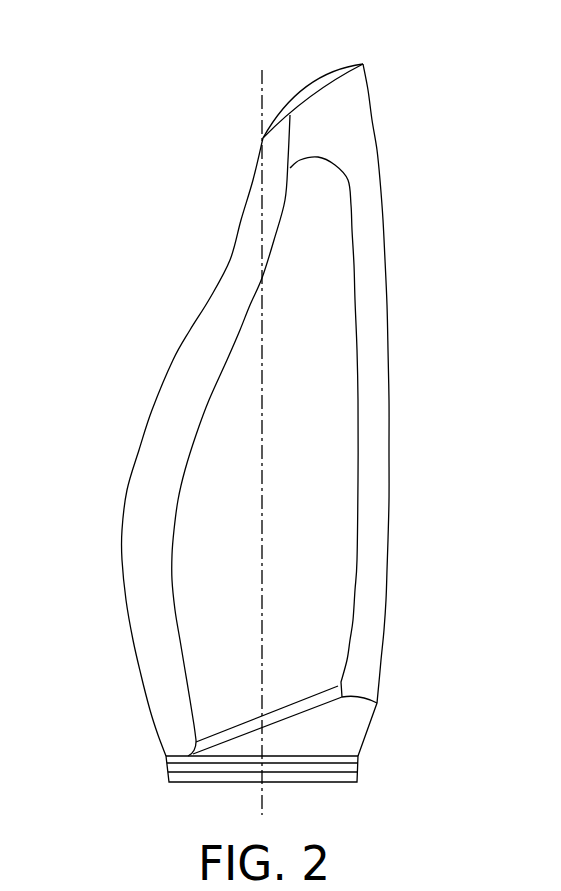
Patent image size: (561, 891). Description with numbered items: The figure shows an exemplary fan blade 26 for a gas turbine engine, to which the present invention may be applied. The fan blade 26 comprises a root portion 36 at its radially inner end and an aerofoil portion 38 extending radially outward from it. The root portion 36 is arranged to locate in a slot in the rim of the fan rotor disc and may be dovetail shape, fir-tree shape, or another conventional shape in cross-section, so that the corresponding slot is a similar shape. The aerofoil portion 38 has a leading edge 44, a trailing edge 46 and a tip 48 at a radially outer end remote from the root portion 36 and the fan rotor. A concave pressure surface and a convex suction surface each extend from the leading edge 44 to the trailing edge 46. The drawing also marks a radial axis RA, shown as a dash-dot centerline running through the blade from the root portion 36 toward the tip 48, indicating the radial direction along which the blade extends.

The fan blade 26 is at (258, 388).
The root portion 36 is at (295, 770).
The aerofoil portion 38 is at (302, 598).
The leading edge 44 is at (127, 490).
The trailing edge 46 is at (388, 500).
The tip 48 is at (334, 72).
The radial axis RA is at (262, 106).